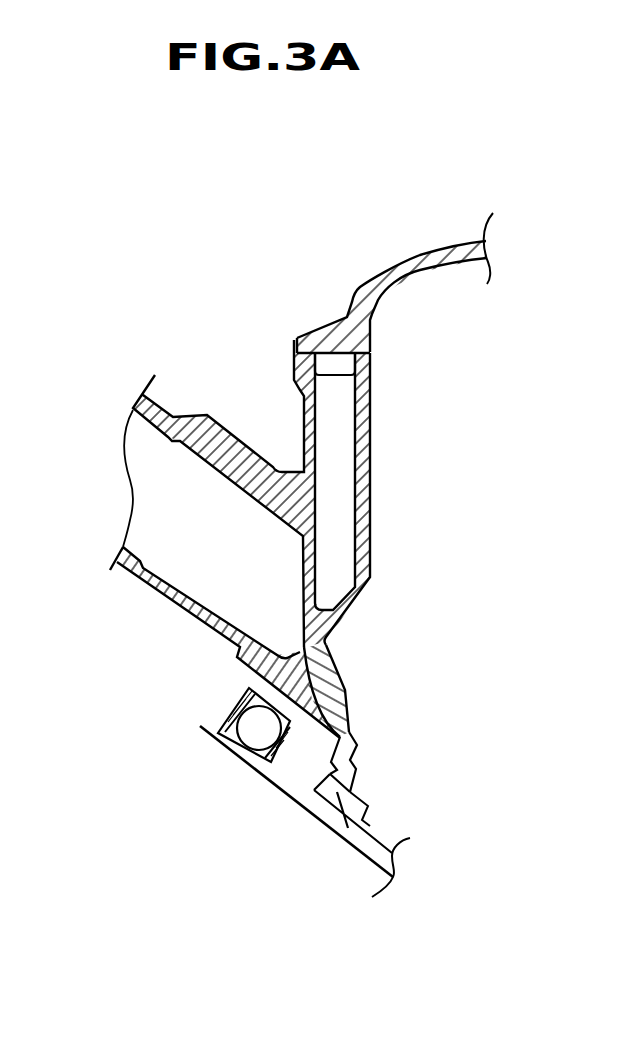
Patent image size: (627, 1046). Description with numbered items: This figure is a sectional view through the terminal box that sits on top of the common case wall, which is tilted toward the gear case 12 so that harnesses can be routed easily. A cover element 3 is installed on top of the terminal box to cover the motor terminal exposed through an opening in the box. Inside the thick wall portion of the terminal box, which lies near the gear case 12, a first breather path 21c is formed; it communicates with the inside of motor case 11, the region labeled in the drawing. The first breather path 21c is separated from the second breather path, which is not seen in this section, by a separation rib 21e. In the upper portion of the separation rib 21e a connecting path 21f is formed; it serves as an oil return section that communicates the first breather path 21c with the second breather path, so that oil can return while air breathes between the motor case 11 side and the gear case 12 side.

The cover element 3 is at (420, 252).
The gear case 12 is at (168, 408).
The first breather path 21c is at (337, 463).
The separation rib 21e is at (337, 522).
The connecting path 21f is at (337, 367).
The motor case 11 is at (401, 796).